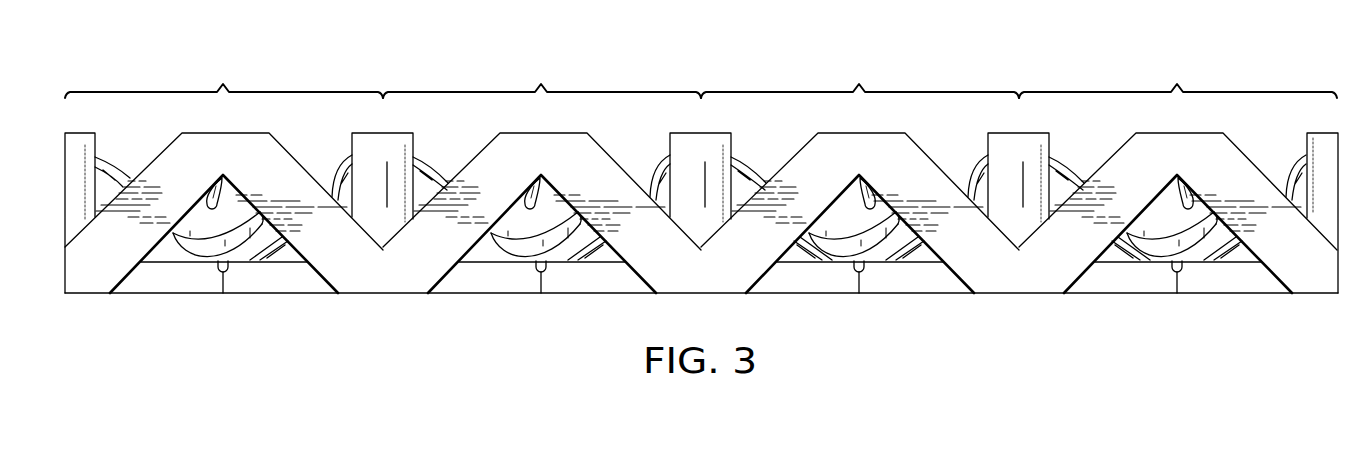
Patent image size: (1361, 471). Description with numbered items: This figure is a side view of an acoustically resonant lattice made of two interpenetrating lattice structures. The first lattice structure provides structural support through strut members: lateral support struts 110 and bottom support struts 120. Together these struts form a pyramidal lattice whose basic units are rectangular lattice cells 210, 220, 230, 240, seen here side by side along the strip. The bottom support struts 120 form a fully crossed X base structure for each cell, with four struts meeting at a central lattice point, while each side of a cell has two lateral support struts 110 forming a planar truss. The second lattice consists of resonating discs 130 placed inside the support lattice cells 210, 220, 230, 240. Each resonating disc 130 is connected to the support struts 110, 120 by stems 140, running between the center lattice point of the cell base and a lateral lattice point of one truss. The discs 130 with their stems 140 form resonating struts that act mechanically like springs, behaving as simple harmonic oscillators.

The lateral support strut 110 is at (145, 236).
The bottom support strut 120 is at (913, 293).
The resonating disc 130 is at (523, 252).
The stem 140 is at (603, 258).
The rectangular lattice cell 210 is at (239, 171).
The rectangular lattice cell 220 is at (557, 150).
The rectangular lattice cell 230 is at (875, 150).
The rectangular lattice cell 240 is at (1178, 171).